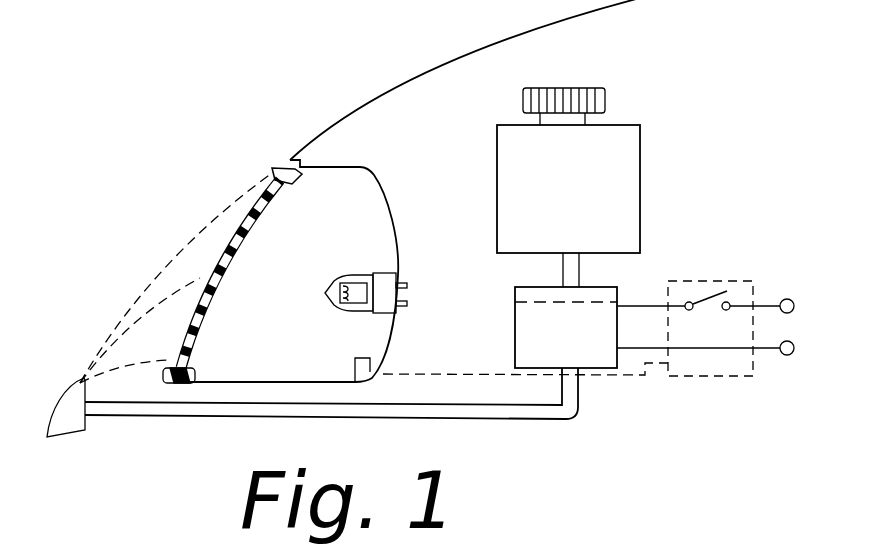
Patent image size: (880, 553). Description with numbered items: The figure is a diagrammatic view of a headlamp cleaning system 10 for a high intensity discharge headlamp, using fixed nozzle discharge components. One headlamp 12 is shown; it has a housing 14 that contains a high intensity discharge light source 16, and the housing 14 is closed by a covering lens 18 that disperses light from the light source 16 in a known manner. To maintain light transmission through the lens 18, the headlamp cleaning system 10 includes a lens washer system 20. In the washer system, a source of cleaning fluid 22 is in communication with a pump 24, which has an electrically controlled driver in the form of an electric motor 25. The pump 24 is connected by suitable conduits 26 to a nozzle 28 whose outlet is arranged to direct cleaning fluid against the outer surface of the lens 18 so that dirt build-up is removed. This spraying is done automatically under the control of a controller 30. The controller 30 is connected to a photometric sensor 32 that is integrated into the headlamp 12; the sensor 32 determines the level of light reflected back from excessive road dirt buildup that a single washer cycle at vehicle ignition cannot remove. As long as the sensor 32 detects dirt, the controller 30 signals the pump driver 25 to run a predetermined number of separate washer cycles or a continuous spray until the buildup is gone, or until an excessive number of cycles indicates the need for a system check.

The headlamp cleaning system 10 is at (156, 243).
The headlamp 12 is at (312, 224).
The housing 14 is at (378, 172).
The high intensity discharge light source 16 is at (337, 297).
The covering lens 18 is at (250, 210).
The lens washer system 20 is at (264, 422).
The source of cleaning fluid 22 is at (630, 165).
The pump 24 is at (526, 312).
The electric motor 25 is at (520, 295).
The conduits 26 is at (448, 412).
The nozzle 28 is at (67, 420).
The controller 30 is at (716, 282).
The photometric sensor 32 is at (355, 366).